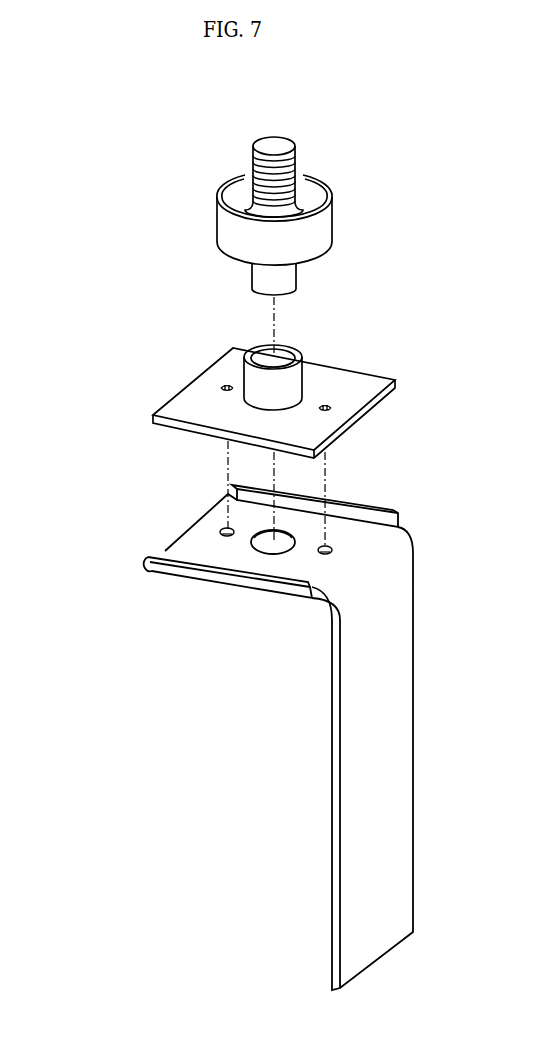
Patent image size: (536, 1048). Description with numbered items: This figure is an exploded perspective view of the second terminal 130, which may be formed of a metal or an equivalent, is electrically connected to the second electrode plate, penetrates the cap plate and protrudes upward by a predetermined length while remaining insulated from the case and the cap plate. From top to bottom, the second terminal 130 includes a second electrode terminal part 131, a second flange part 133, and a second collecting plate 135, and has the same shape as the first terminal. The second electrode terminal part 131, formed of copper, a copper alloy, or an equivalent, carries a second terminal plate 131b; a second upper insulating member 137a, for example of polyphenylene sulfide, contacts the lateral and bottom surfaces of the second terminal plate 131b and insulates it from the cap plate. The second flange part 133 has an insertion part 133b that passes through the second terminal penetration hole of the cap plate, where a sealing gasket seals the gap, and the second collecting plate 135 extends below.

The second terminal 130 is at (63, 88).
The second electrode terminal part 131 is at (202, 147).
The second terminal plate 131b is at (313, 198).
The second upper insulating member 137a is at (333, 237).
The second flange part 133 is at (163, 342).
The insertion part 133b is at (297, 382).
The second collecting plate 135 is at (152, 513).